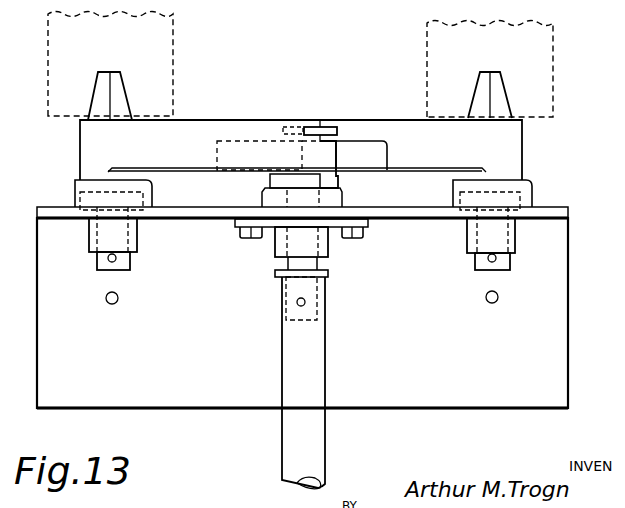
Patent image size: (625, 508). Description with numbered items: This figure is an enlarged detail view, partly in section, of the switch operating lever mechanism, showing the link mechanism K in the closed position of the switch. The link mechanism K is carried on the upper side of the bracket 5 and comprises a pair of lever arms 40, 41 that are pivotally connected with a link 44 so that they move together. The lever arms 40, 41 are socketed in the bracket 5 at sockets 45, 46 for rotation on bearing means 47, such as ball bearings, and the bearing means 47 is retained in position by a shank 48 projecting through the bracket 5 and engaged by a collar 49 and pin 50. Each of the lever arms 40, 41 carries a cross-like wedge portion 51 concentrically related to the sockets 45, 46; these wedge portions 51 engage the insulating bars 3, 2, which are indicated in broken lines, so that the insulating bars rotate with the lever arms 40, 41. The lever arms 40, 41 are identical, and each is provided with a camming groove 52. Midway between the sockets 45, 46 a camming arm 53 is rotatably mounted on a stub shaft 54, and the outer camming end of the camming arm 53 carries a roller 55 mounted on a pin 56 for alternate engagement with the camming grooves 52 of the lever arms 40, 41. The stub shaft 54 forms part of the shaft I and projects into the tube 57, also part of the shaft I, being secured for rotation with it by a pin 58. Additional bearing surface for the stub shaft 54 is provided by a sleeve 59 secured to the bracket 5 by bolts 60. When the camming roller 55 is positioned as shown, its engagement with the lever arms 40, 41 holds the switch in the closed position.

The insulating bar 2 is at (553, 72).
The insulating bar 3 is at (62, 70).
The bracket 5 is at (545, 212).
The lever arm 40 is at (181, 134).
The lever arm 41 is at (411, 130).
The link 44 is at (328, 128).
The socket 45 is at (78, 190).
The socket 46 is at (527, 189).
The bearing means 47 is at (90, 199).
The shank 48 is at (130, 264).
The collar 49 is at (137, 237).
The pin 50 is at (108, 259).
The cross-like wedge portion 51 is at (100, 88).
The camming groove 52 is at (251, 100).
The camming arm 53 is at (272, 182).
The stub shaft 54 is at (290, 267).
The roller 55 is at (326, 157).
The pin 56 is at (489, 261).
The tube 57 is at (293, 360).
The pin 58 is at (297, 303).
The sleeve 59 is at (285, 239).
The bolts 60 is at (243, 233).
The link mechanism K is at (300, 110).
The shaft I is at (265, 437).